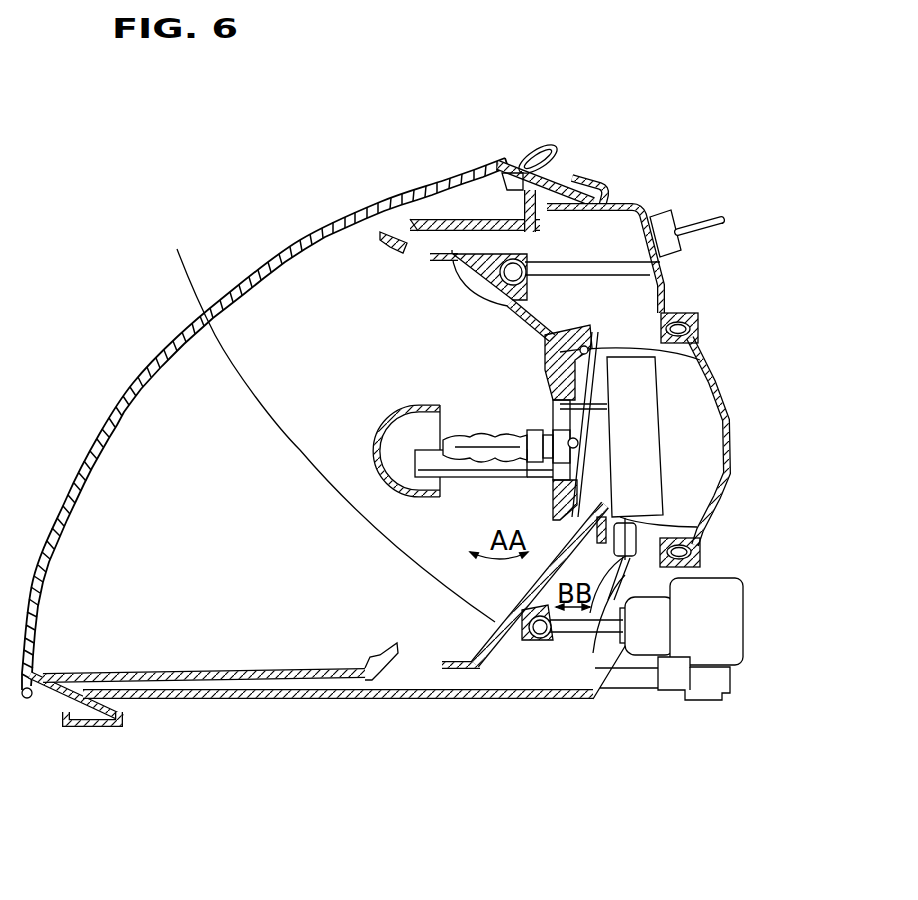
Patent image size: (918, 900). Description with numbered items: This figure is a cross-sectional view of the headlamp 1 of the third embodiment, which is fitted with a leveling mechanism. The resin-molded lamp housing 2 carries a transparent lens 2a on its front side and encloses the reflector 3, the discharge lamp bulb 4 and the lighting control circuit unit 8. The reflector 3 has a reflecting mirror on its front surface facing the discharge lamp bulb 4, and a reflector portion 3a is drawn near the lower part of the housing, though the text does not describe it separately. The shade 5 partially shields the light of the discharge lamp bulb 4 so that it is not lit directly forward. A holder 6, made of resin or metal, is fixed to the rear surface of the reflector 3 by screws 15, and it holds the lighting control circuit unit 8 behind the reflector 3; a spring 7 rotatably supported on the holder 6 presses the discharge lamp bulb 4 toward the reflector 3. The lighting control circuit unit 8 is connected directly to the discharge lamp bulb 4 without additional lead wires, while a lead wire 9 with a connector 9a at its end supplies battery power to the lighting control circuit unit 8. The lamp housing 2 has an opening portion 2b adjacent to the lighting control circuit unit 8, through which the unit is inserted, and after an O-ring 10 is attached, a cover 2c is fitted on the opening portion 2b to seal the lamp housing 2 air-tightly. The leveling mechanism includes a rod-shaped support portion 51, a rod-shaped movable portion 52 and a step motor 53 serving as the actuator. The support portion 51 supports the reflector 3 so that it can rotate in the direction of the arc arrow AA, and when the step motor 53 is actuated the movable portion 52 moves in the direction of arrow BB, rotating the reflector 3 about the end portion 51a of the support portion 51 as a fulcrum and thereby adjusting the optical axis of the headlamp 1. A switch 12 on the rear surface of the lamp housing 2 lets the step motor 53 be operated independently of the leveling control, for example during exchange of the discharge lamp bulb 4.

The headlamp 1 is at (67, 132).
The lamp housing 2 is at (147, 343).
The transparent lens 2a is at (173, 332).
The opening portion 2b is at (660, 342).
The cover 2c is at (713, 353).
The reflector 3 is at (462, 672).
The lamp body lower wall 3a is at (384, 443).
The discharge lamp bulb 4 is at (470, 432).
The shade 5 is at (378, 432).
The holder 6 is at (452, 250).
The spring 7 is at (545, 422).
The lighting control circuit unit 8 is at (611, 348).
The lead wire 9 is at (628, 677).
The connector 9a is at (671, 683).
The O-ring 10 is at (697, 547).
The switch 12 is at (703, 207).
The screws 15 is at (700, 357).
The support portion 51 is at (586, 275).
The end portion 51a is at (540, 248).
The movable portion 52 is at (580, 632).
The step motor 53 is at (735, 628).